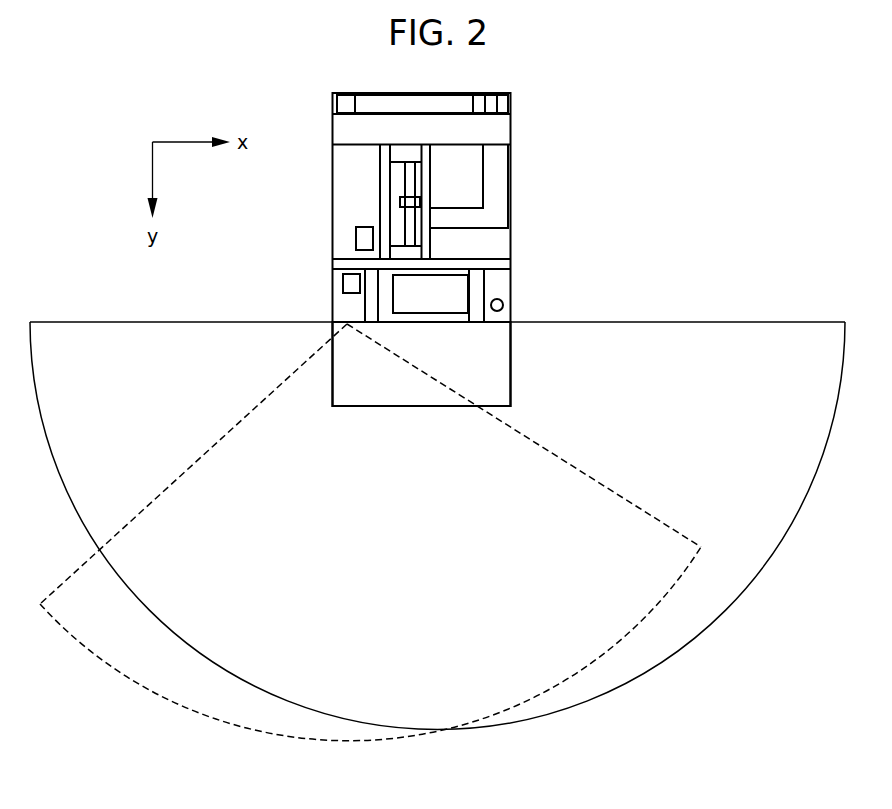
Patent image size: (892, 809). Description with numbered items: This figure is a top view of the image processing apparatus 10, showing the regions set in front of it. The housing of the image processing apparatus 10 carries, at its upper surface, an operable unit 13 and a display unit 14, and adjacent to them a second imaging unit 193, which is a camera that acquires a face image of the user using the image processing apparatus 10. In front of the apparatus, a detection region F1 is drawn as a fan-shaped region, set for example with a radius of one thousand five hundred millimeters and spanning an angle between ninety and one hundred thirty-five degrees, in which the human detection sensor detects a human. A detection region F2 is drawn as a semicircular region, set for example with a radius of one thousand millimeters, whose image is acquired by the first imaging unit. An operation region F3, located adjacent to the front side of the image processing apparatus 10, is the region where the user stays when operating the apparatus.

The image processing apparatus 10 is at (415, 271).
The operable unit 13 is at (413, 264).
The display unit 14 is at (452, 283).
The second imaging unit 193 is at (341, 283).
The detection region F1 is at (597, 480).
The detection region F2 is at (685, 321).
The operation region F3 is at (395, 408).